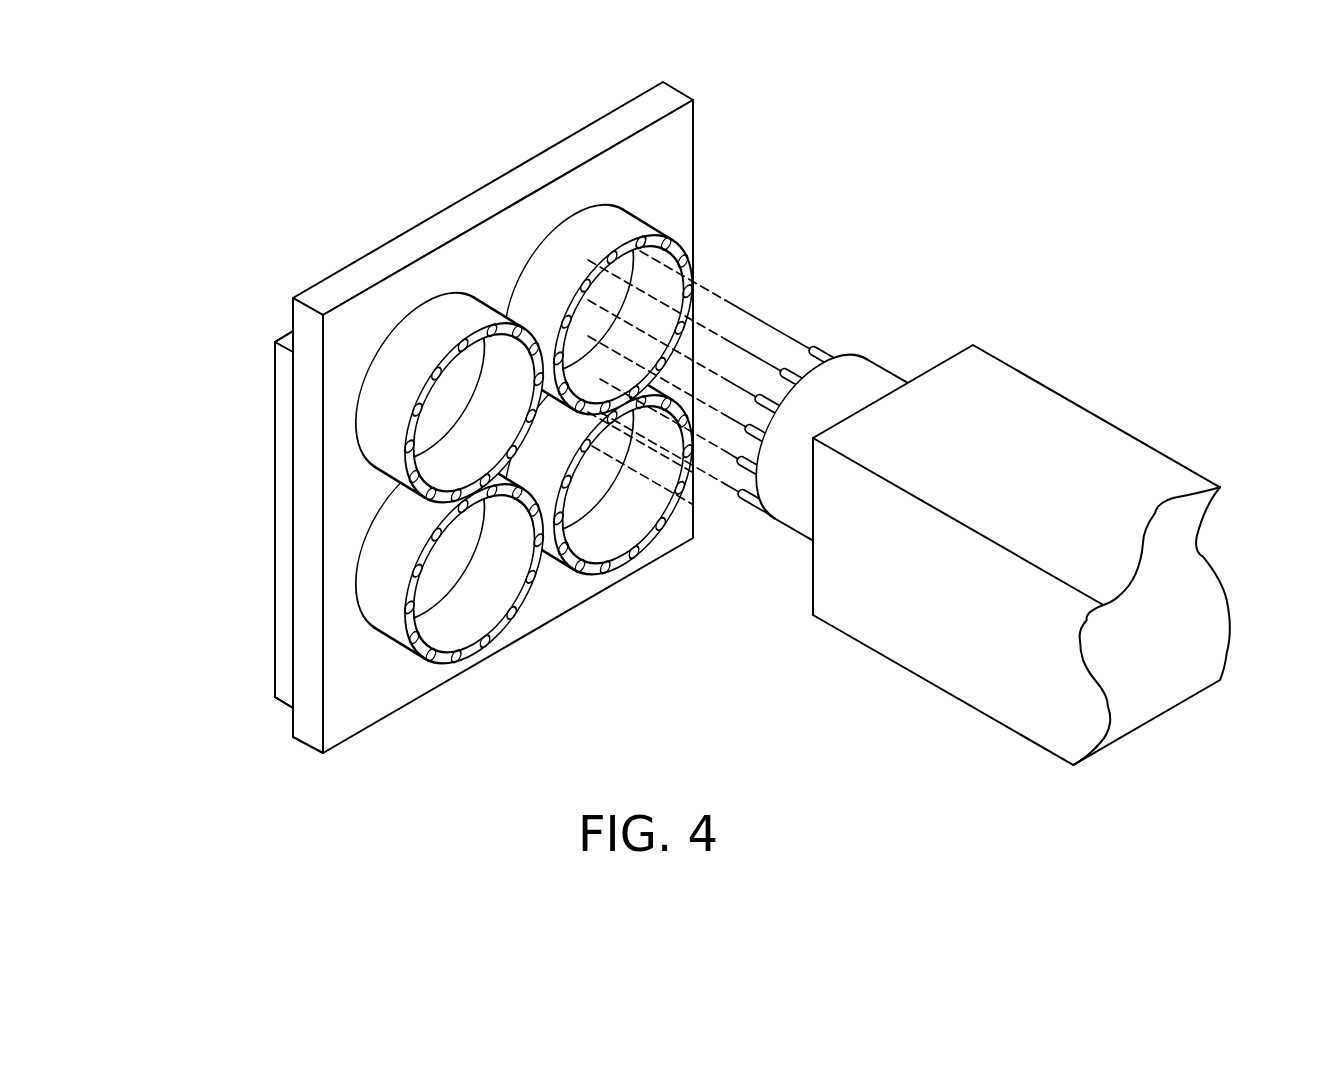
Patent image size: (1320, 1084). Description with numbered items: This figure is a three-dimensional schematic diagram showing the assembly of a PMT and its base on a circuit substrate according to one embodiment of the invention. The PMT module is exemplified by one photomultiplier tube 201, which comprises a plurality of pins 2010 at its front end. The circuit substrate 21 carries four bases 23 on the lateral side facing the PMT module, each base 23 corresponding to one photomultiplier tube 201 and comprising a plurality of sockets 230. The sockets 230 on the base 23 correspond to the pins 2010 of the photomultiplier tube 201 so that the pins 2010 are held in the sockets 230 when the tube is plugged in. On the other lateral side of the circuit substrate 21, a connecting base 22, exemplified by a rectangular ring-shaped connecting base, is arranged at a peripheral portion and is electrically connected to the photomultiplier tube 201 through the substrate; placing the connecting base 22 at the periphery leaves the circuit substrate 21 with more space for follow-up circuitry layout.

The circuit substrate 21 is at (348, 713).
The connecting base 22 is at (287, 580).
The base 23 is at (598, 238).
The socket 230 is at (641, 243).
The photomultiplier tube 201 is at (1055, 457).
The pin 2010 is at (818, 345).